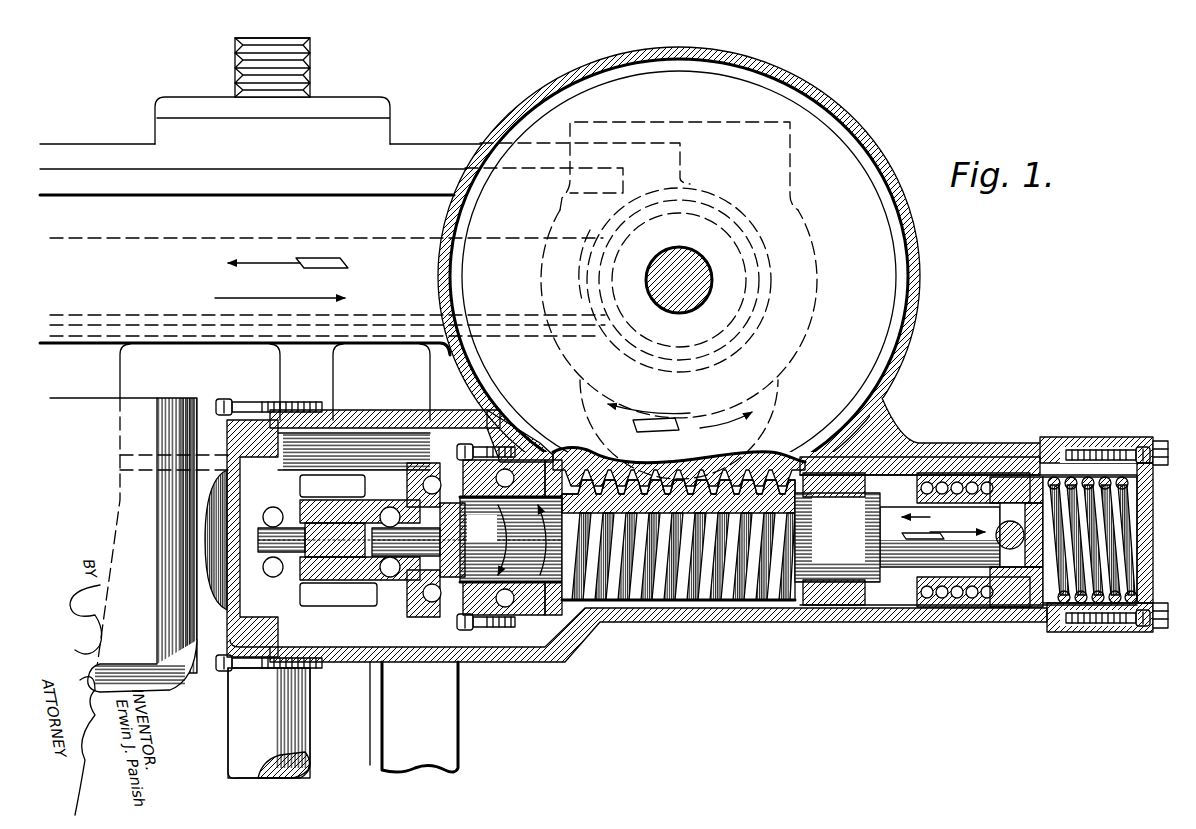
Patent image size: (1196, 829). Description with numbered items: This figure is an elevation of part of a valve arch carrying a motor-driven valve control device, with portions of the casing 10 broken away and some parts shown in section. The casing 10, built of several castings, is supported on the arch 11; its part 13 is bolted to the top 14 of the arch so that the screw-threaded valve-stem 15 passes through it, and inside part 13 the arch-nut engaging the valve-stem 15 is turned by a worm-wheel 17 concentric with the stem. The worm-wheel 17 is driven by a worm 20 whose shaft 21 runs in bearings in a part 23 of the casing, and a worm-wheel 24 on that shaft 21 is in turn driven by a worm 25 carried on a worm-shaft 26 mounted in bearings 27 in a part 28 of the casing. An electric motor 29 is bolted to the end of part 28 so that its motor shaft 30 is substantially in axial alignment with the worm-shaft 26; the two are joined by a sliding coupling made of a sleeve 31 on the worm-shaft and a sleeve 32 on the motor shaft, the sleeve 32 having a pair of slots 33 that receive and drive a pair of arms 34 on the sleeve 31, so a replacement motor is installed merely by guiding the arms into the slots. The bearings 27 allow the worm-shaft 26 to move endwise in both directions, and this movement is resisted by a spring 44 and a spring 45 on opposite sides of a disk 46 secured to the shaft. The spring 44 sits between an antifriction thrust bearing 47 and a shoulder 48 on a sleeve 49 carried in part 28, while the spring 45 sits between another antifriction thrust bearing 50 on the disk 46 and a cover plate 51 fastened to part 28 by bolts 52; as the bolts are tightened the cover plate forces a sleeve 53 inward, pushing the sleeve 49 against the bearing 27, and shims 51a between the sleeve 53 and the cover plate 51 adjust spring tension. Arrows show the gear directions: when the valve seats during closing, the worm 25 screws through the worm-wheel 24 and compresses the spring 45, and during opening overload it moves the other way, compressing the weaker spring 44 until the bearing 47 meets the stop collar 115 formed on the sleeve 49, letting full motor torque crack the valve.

The casing 10 is at (222, 216).
The arch 11 is at (448, 704).
The part of the casing 13 is at (126, 380).
The top of the arch 14 is at (118, 458).
The valve-stem 15 is at (312, 64).
The worm-wheel 17 is at (369, 250).
The worm 20 is at (738, 328).
The shaft 21 is at (686, 256).
The part of the casing 23 is at (772, 295).
The worm-wheel 24 is at (578, 450).
The worm 25 is at (632, 604).
The worm-shaft 26 is at (743, 633).
The bearings 27 is at (538, 625).
The part of the casing 28 is at (320, 678).
The electric motor 29 is at (122, 533).
The motor shaft 30 is at (270, 541).
The sleeve 31 is at (403, 480).
The sleeve 32 is at (320, 555).
The slots 33 is at (250, 478).
The arms 34 is at (338, 542).
The spring 44 is at (972, 480).
The spring 45 is at (1060, 478).
The disk 46 is at (1018, 600).
The antifriction thrust bearing 47 is at (1010, 478).
The shoulder 48 is at (870, 509).
The sleeve 49 is at (900, 478).
The antifriction thrust bearing 50 is at (1035, 478).
The cover plate 51 is at (1138, 440).
The shims 51a is at (1080, 630).
The bolts 52 is at (1165, 448).
The sleeve 53 is at (972, 606).
The stop collar 115 is at (943, 528).